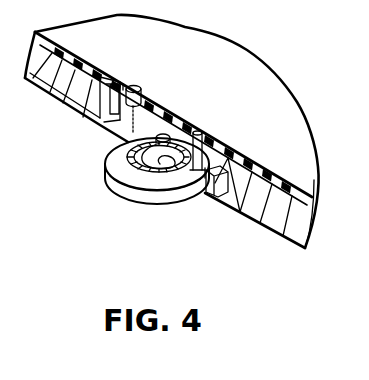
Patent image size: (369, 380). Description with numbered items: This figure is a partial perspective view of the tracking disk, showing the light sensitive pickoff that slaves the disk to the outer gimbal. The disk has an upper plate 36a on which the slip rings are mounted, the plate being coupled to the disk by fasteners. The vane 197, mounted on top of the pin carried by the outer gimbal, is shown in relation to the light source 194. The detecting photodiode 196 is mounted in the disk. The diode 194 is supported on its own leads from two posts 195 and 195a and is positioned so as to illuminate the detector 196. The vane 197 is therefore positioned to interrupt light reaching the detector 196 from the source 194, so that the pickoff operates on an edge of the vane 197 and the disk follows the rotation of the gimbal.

The upper plate 36a is at (258, 65).
The light source 194 is at (107, 152).
The post 195 is at (121, 83).
The post 195a is at (208, 172).
The detecting photodiode 196 is at (141, 88).
The vane 197 is at (192, 128).